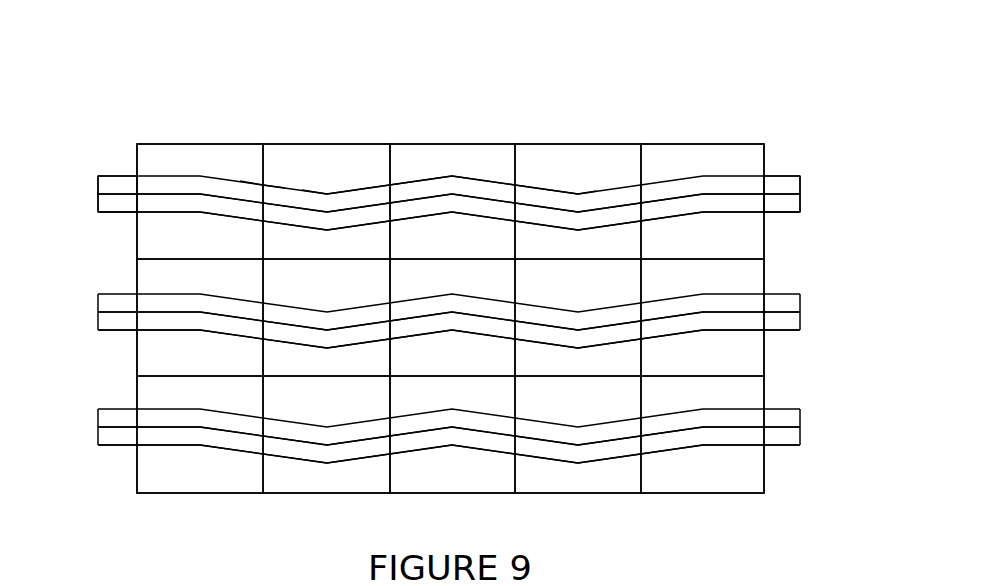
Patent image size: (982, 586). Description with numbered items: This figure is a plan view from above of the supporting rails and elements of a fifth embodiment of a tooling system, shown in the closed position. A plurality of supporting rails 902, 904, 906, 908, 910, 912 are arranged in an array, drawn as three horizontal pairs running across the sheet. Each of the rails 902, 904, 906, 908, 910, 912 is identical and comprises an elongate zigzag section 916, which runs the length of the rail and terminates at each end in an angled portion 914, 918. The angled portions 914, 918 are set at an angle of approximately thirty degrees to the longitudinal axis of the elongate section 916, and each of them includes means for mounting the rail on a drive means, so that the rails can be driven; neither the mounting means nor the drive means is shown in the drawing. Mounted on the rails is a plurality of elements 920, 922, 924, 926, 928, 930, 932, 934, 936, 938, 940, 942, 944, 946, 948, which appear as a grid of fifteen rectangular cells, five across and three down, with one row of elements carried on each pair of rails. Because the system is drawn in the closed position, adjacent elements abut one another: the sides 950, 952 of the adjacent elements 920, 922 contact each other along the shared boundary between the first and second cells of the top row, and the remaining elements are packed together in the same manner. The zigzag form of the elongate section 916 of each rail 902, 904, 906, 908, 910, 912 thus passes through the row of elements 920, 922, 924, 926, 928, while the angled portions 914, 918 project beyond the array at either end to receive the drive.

The supporting rail 902 is at (728, 182).
The supporting rail 904 is at (738, 203).
The supporting rail 906 is at (742, 303).
The supporting rail 908 is at (743, 320).
The supporting rail 910 is at (750, 417).
The supporting rail 912 is at (750, 433).
The angled portion 914 is at (118, 183).
The elongate zigzag section 916 is at (597, 192).
The angled portion 918 is at (782, 183).
The element 920 is at (173, 252).
The element 922 is at (308, 252).
The element 924 is at (428, 252).
The element 926 is at (558, 252).
The element 928 is at (683, 252).
The element 930 is at (173, 369).
The element 932 is at (308, 369).
The element 934 is at (428, 369).
The element 936 is at (558, 369).
The element 938 is at (683, 369).
The element 940 is at (173, 486).
The element 942 is at (308, 486).
The element 944 is at (428, 486).
The element 946 is at (558, 486).
The element 948 is at (683, 486).
The side 950 is at (260, 172).
The side 952 is at (267, 177).